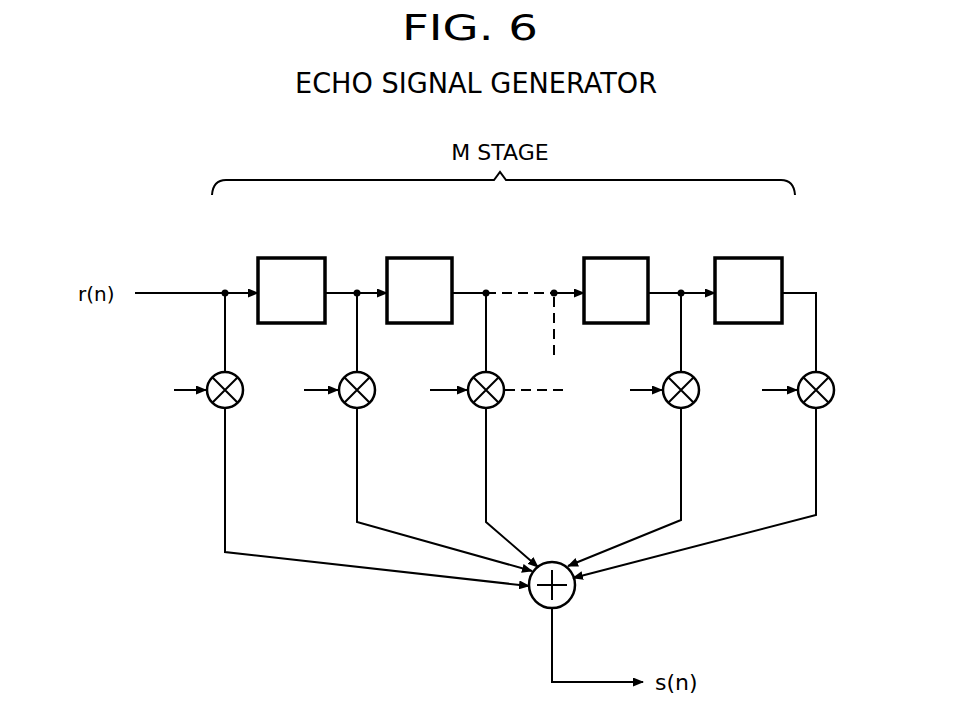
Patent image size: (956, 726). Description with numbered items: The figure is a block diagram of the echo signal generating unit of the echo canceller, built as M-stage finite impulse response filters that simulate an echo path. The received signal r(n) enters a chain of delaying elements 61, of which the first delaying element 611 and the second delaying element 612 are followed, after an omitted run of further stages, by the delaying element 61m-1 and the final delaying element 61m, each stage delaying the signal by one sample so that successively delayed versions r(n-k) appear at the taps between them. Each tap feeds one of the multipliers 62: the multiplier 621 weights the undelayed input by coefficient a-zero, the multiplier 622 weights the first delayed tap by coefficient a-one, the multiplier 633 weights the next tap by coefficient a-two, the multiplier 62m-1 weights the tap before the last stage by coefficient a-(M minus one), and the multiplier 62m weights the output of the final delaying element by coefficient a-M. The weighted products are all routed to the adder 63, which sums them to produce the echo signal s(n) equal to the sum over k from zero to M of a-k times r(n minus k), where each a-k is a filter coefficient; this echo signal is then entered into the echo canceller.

The delaying element 61 is at (520, 281).
The delaying element 611 is at (285, 258).
The delaying element 612 is at (420, 258).
The delaying element 61m-1 is at (612, 258).
The delaying element 61m is at (740, 258).
The multiplier 62 is at (489, 419).
The multiplier 621 is at (220, 410).
The multiplier 622 is at (352, 410).
The multiplier 633 is at (480, 410).
The multiplier 62m-1 is at (677, 410).
The multiplier 62m is at (810, 410).
The adder 63 is at (530, 600).